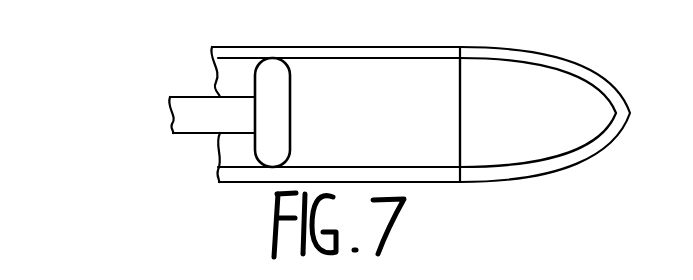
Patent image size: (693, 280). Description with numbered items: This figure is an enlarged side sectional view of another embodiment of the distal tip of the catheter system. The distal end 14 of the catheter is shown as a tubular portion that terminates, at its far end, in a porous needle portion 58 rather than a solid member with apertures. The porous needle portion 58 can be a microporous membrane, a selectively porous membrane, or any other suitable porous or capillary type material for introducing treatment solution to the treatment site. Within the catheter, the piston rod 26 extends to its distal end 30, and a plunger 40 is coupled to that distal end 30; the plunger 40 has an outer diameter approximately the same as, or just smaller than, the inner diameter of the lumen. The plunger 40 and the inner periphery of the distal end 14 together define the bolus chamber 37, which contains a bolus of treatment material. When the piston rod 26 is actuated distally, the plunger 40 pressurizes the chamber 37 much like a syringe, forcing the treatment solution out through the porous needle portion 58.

The distal end 14 is at (433, 52).
The piston rod 26 is at (169, 146).
The distal end 30 is at (220, 112).
The bolus chamber 37 is at (428, 138).
The plunger 40 is at (270, 72).
The porous needle portion 58 is at (603, 78).